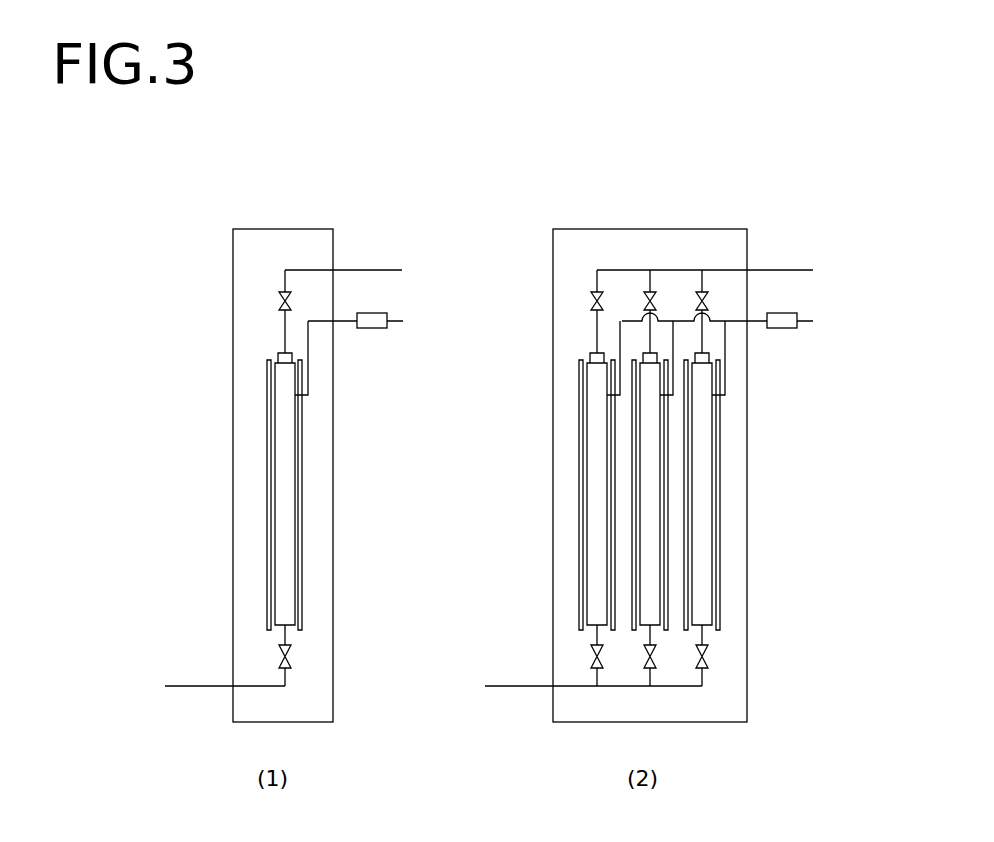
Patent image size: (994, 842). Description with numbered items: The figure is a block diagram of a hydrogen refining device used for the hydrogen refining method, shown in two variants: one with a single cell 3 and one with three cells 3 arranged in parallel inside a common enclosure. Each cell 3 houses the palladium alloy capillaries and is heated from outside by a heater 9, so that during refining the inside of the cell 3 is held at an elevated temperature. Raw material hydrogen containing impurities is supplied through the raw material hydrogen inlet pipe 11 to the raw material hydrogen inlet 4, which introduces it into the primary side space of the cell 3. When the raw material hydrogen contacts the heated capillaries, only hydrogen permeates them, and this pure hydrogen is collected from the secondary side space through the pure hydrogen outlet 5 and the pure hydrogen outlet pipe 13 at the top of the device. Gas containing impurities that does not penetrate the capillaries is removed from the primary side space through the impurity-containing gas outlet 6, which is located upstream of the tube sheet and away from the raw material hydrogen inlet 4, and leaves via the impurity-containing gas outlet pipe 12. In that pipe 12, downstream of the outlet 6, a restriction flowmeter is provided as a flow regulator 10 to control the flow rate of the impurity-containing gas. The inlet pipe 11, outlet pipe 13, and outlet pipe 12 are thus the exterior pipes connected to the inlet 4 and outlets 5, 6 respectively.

The cell 3 is at (292, 488).
The raw material hydrogen inlet 4 is at (268, 613).
The pure hydrogen outlet 5 is at (280, 353).
The impurity-containing gas outlet 6 is at (300, 397).
The heater 9 is at (302, 592).
The flow regulator 10 is at (387, 328).
The raw material hydrogen inlet pipe 11 is at (210, 686).
The impurity-containing gas outlet pipe 12 is at (403, 321).
The pure hydrogen outlet pipe 13 is at (370, 270).